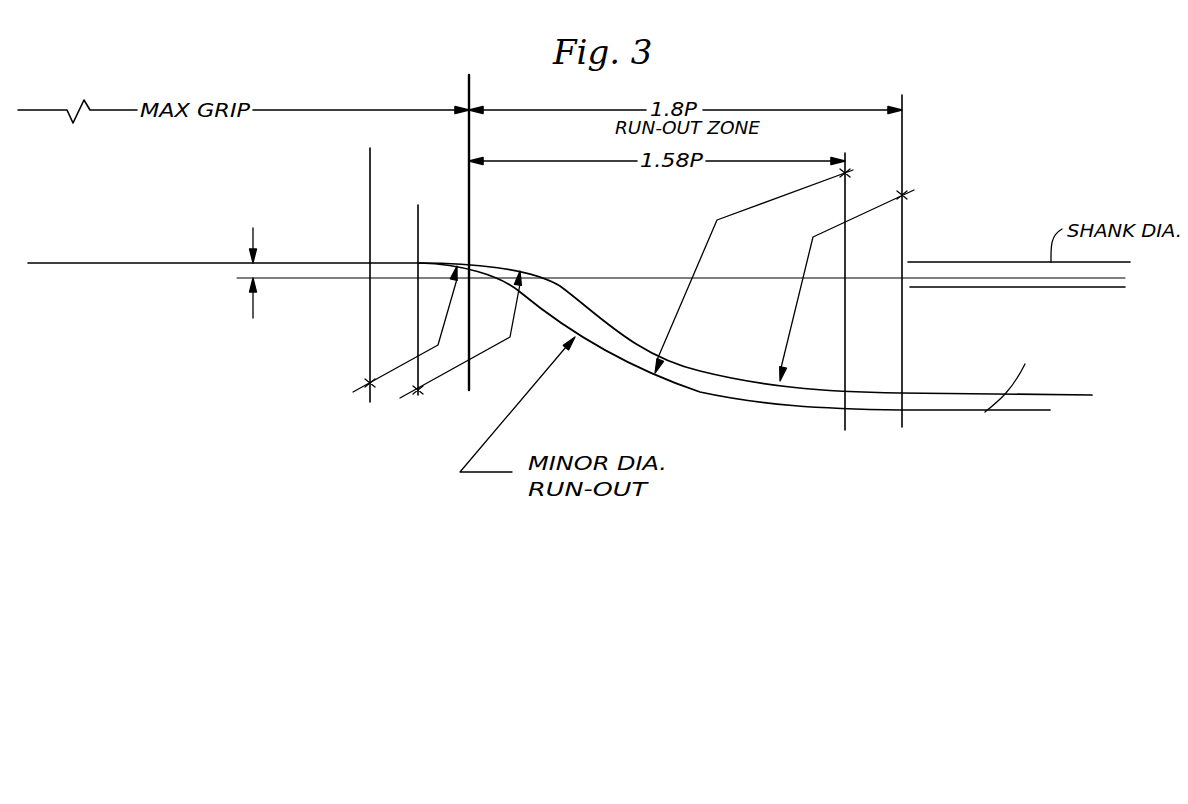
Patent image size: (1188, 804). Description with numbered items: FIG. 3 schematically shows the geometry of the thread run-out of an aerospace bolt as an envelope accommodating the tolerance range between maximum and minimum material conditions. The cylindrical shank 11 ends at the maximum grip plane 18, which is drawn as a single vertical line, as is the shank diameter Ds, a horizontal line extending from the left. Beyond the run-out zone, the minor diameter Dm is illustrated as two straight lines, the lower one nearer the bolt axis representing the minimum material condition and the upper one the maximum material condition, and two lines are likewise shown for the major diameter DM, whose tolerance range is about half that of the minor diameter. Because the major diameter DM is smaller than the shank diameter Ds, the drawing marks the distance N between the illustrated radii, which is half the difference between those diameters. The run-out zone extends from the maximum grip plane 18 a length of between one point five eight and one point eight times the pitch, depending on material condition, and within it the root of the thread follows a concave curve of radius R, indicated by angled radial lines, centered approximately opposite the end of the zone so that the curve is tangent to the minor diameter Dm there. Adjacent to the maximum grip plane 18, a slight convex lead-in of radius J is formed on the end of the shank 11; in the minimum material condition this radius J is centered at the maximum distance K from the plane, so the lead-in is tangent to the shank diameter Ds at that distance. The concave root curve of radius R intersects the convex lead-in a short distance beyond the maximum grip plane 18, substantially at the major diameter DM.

The cylindrical shank 11 is at (297, 263).
The maximum grip plane 18 is at (466, 85).
The maximum distance from the maximum grip plane K is at (326, 162).
The lead-in radius J is at (425, 341).
The distance between the radii N is at (251, 285).
The run-out radius R is at (784, 275).
The shank diameter Ds is at (75, 263).
The major diameter DM is at (962, 285).
The minor diameter Dm is at (1024, 383).